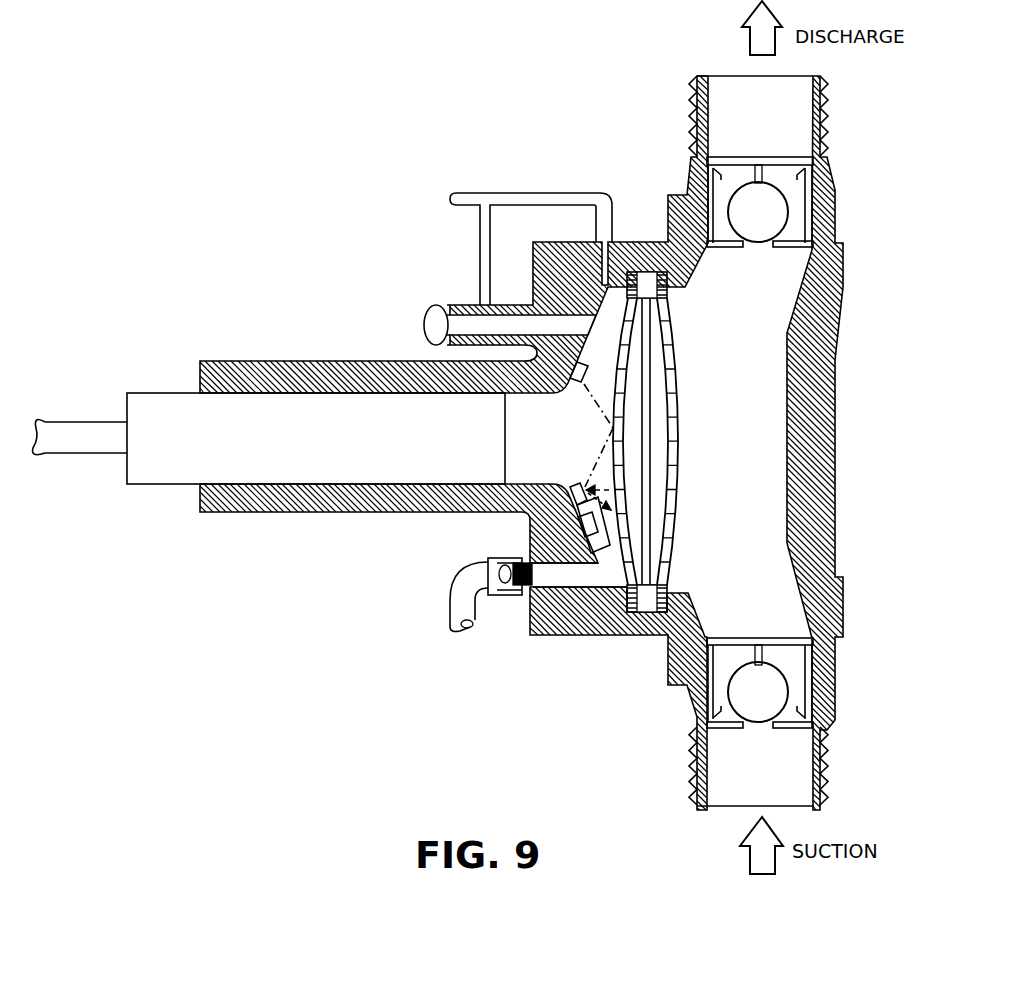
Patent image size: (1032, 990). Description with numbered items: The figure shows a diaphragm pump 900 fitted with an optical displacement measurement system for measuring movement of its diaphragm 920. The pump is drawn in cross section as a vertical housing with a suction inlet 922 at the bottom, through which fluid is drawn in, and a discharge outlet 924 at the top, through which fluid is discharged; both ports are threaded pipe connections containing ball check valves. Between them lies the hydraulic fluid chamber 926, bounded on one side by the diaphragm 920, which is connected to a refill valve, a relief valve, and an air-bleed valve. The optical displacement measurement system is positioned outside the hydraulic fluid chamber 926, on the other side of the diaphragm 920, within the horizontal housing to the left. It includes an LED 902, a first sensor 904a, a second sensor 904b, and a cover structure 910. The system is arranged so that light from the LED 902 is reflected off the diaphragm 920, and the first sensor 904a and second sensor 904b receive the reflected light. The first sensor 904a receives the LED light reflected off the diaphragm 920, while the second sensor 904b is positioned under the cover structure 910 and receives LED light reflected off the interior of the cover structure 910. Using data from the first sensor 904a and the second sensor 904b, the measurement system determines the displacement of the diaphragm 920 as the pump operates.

The diaphragm pump 900 is at (140, 53).
The LED 902 is at (576, 487).
The first sensor 904a is at (593, 362).
The second sensor 904b is at (583, 533).
The cover structure 910 is at (610, 586).
The diaphragm 920 is at (675, 563).
The suction inlet 922 is at (790, 793).
The discharge outlet 924 is at (795, 115).
The hydraulic fluid chamber 926 is at (742, 424).